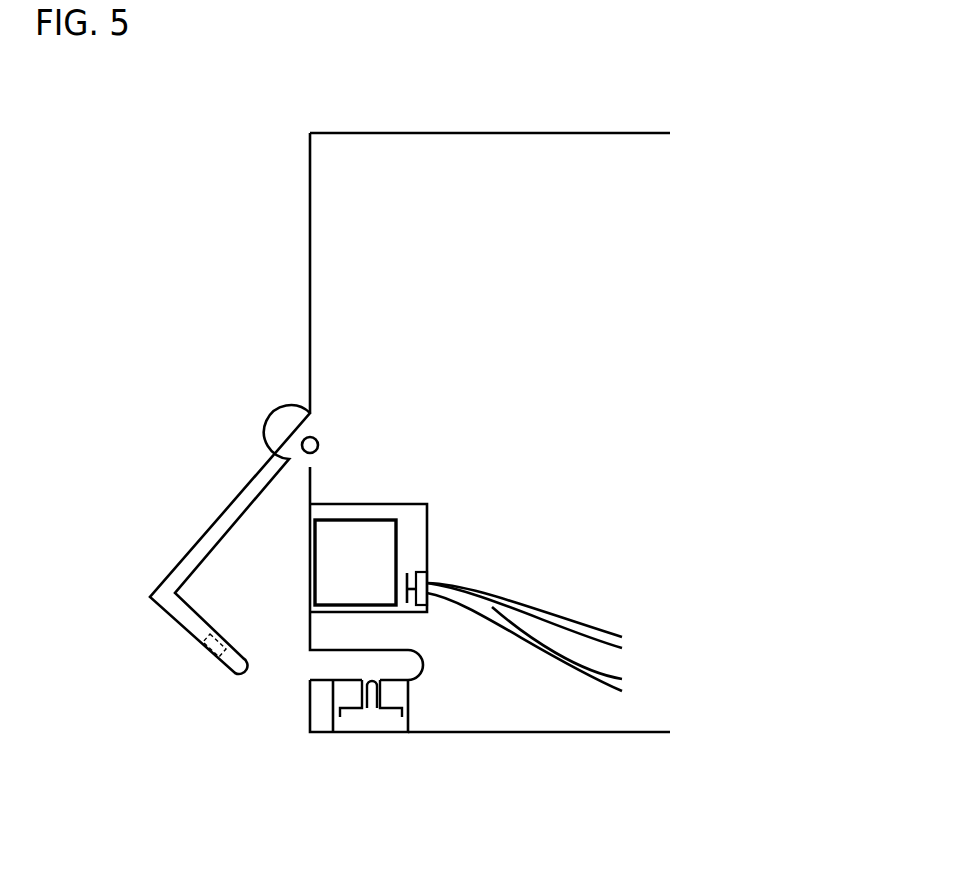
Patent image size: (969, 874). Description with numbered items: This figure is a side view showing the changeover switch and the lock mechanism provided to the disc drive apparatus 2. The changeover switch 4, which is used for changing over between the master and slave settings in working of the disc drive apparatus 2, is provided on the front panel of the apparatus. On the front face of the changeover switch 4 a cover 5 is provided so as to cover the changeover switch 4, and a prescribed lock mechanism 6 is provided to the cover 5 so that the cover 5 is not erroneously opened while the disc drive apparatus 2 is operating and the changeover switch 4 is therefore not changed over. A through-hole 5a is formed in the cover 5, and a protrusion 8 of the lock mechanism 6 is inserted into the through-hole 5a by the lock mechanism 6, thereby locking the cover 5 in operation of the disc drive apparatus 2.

The disc drive apparatus 2 is at (366, 133).
The changeover switch 4 is at (370, 537).
The cover 5 is at (232, 497).
The through-hole 5a is at (212, 648).
The lock mechanism 6 is at (373, 720).
The protrusion 8 is at (370, 696).